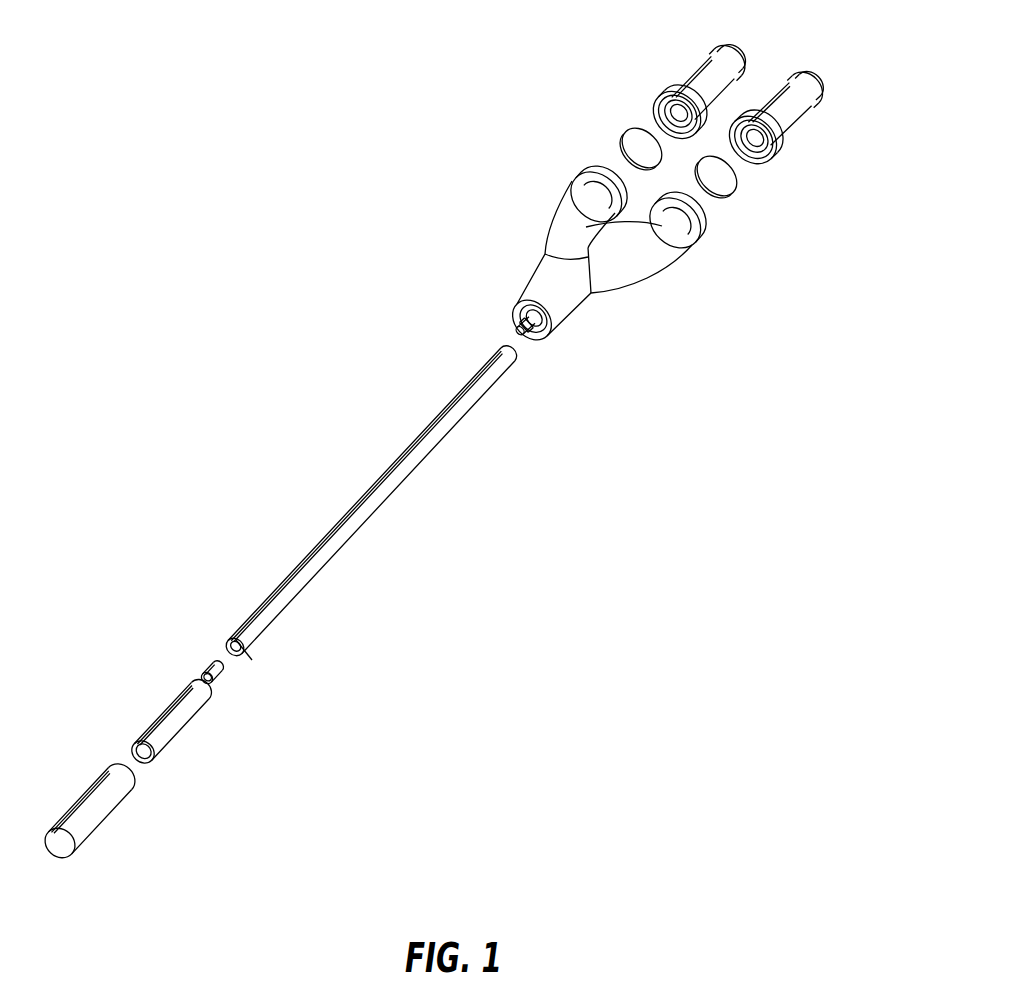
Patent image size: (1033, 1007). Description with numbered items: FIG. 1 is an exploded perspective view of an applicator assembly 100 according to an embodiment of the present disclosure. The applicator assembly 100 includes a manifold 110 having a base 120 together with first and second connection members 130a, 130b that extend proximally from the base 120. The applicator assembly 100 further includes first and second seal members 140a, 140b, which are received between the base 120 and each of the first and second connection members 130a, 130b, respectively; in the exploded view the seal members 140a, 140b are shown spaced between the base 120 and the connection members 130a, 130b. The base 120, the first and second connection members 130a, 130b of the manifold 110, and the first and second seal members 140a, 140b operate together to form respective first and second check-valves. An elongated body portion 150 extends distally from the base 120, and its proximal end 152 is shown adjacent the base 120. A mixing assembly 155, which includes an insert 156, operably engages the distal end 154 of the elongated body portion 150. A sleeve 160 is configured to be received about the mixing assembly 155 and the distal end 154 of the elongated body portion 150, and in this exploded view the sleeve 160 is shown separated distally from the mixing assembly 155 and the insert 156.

The applicator assembly 100 is at (252, 283).
The manifold 110 is at (500, 175).
The base 120 is at (657, 290).
The first connection member 130a is at (662, 55).
The second connection member 130b is at (812, 128).
The first seal member 140a is at (608, 127).
The second seal member 140b is at (745, 195).
The elongated body portion 150 is at (428, 500).
The proximal end of catheter tube 152 is at (505, 373).
The distal end 154 is at (258, 650).
The mixing assembly 155 is at (187, 760).
The insert 156 is at (230, 680).
The sleeve 160 is at (97, 837).